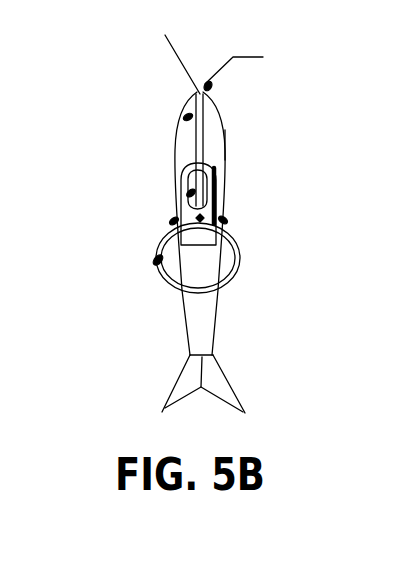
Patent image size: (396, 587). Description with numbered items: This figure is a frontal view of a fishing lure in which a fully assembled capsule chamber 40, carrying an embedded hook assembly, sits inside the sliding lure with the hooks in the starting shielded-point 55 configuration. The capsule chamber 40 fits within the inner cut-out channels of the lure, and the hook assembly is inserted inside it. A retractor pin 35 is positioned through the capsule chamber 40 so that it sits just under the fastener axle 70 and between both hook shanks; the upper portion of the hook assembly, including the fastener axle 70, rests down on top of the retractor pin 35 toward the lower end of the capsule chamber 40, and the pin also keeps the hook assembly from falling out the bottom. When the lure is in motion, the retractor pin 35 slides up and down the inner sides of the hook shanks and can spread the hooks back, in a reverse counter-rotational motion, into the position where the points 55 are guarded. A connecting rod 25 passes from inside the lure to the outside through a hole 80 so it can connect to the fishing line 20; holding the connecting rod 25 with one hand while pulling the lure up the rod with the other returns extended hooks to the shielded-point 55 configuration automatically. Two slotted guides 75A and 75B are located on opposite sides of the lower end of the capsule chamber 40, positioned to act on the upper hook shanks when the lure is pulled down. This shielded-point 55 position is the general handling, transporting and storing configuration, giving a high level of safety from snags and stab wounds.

The fishing line 20 is at (171, 58).
The connecting rod 25 is at (184, 115).
The retractor pin 35 is at (220, 172).
The capsule chamber 40 is at (227, 147).
The shielded point 55 is at (155, 262).
The fastener axle 70 is at (188, 192).
The slotted guide 75A is at (168, 222).
The slotted guide 75B is at (229, 222).
The hole 80 is at (263, 57).